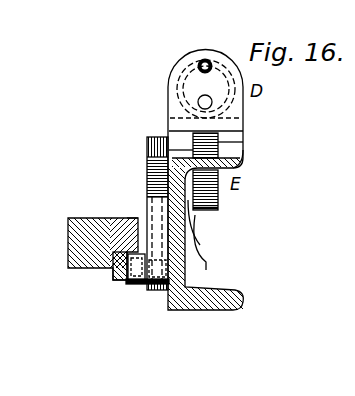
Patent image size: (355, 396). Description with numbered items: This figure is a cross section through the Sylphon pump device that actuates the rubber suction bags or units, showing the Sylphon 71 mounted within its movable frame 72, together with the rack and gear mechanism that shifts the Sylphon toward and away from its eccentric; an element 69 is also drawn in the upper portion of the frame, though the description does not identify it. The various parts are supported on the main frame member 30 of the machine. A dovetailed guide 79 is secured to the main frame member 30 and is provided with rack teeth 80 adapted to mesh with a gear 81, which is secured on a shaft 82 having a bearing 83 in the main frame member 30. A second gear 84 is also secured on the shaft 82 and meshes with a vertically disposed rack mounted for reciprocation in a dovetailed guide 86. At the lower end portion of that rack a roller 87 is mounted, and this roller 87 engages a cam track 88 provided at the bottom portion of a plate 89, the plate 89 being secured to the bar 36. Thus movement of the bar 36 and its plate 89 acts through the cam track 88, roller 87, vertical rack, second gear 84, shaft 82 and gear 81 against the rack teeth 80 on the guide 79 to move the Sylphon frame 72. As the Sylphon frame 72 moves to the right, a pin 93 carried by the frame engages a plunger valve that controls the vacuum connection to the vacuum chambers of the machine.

The main frame member 30 is at (186, 278).
The bar 36 is at (76, 217).
The pin 69 is at (201, 60).
The Sylphon 71 is at (178, 79).
The movable frame 72 is at (170, 100).
The dovetailed guide 79 is at (243, 143).
The rack teeth 80 is at (246, 152).
The gear 81 is at (207, 212).
The shaft 82 is at (200, 244).
The bearing 83 is at (210, 242).
The second gear 84 is at (150, 180).
The dovetailed guide 86 is at (125, 200).
The roller 87 is at (135, 286).
The cam track 88 is at (115, 279).
The plate 89 is at (140, 216).
The pin 93 is at (205, 102).